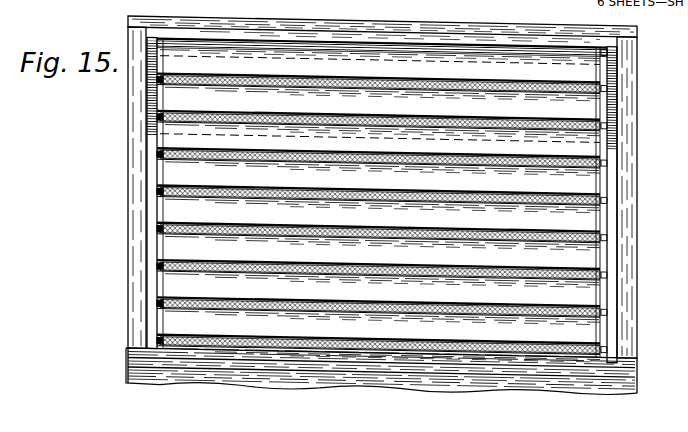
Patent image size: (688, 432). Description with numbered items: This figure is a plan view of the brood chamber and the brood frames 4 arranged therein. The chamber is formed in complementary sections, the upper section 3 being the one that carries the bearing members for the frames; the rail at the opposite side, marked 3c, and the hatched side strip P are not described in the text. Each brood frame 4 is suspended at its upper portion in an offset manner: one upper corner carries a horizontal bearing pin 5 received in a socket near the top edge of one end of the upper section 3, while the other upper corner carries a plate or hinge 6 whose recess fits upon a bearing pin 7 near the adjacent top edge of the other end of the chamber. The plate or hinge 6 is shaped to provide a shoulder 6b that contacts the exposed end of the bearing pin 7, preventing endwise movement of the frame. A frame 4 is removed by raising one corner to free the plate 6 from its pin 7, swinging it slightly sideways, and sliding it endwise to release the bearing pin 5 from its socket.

The upper section of brood chamber 3 is at (147, 40).
The bottom rail of frame 3c is at (197, 357).
The vertical side strip P is at (148, 90).
The brood frames 4 is at (175, 172).
The bearing pin 5 is at (148, 300).
The plate or hinge 6 is at (630, 100).
The shoulder 6b is at (608, 141).
The bearing pin 7 is at (612, 262).